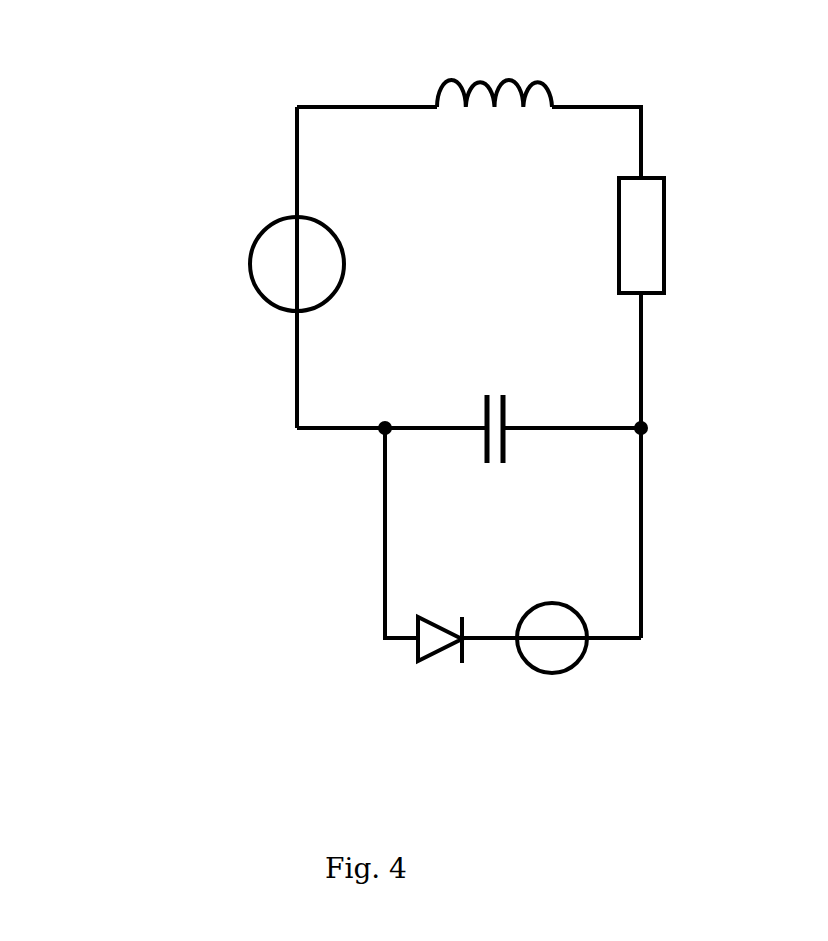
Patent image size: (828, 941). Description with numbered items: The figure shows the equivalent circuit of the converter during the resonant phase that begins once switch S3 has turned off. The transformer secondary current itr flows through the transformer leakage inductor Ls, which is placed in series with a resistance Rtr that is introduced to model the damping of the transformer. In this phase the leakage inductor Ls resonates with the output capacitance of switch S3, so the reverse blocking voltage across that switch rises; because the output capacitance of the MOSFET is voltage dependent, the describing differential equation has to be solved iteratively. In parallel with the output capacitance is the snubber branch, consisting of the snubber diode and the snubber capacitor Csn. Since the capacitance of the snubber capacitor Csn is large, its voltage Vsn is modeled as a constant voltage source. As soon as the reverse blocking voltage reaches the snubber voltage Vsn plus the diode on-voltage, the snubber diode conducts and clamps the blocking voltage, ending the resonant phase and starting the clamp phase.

The transformer leakage inductor Ls is at (494, 56).
The damping resistance Rtr is at (597, 235).
The secondary current itr is at (359, 68).
The snubber capacitor Csn is at (552, 606).
The snubber voltage Vsn is at (592, 690).